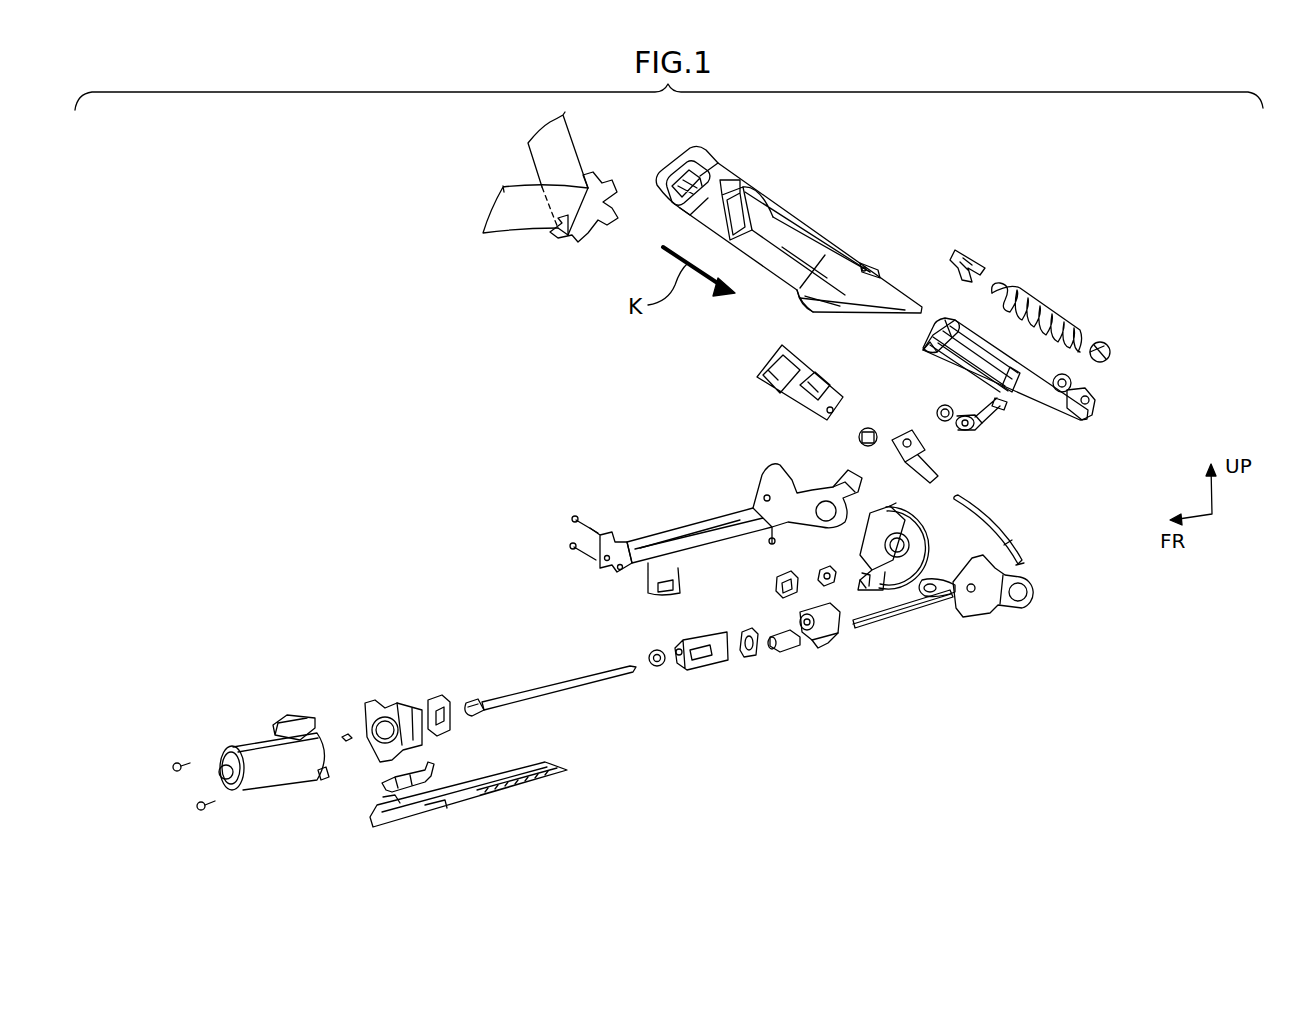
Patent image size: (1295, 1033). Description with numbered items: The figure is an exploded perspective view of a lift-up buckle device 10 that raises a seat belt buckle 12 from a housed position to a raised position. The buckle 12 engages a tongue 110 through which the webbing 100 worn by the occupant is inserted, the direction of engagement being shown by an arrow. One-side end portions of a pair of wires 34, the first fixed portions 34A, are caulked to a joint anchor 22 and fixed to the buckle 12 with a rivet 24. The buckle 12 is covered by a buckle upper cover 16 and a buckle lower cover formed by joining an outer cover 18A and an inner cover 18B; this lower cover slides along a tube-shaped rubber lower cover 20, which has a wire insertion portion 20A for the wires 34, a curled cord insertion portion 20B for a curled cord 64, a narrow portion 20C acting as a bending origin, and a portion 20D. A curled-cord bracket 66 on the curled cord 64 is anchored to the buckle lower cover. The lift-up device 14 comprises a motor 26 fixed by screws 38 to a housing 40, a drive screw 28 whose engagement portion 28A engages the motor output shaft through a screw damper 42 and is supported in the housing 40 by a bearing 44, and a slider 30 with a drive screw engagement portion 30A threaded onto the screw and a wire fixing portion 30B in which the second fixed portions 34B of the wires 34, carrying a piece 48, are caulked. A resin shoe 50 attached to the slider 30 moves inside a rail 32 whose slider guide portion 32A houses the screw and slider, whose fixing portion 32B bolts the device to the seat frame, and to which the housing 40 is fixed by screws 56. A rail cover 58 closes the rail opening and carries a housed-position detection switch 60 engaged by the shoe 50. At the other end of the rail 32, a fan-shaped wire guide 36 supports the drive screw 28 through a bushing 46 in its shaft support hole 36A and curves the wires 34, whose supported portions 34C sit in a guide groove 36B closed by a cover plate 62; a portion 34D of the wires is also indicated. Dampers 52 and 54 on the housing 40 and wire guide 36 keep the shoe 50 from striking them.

The lift-up buckle device 10 is at (360, 358).
The buckle 12 is at (760, 368).
The lift-up device 14 is at (834, 754).
The buckle upper cover 16 is at (738, 163).
The outer cover 18A is at (868, 257).
The inner cover 18B is at (780, 233).
The lower cover 20 is at (1095, 409).
The wire insertion portion 20A is at (940, 350).
The curled cord insertion portion 20B is at (935, 328).
The narrow portion 20C is at (1000, 410).
The rail bracket 20D is at (1018, 398).
The joint anchor 22 is at (985, 400).
The rivet 24 is at (871, 426).
The motor 26 is at (279, 786).
The drive screw 28 is at (536, 684).
The engagement portion 28A is at (477, 699).
The slider 30 is at (833, 631).
The drive screw engagement portion 30A is at (800, 614).
The wire fixing portion 30B is at (856, 624).
The rail 32 is at (737, 495).
The slider guide portion 32A is at (706, 545).
The fixing portion 32B is at (815, 492).
The wires 34 is at (890, 603).
The first fixed portions 34A is at (980, 504).
The second fixed portions 34B is at (880, 623).
The supported portions 34C is at (1022, 564).
The wire portion 34D is at (1010, 528).
The wire guide 36 is at (935, 547).
The shaft support hole 36A is at (862, 570).
The guide groove 36B is at (919, 512).
The screws 38 is at (196, 805).
The housing 40 is at (391, 724).
The screw damper 42 is at (345, 732).
The bearing 44 is at (661, 666).
The bushing 46 is at (818, 574).
The piece 48 is at (796, 641).
The shoe 50 is at (718, 658).
The damper 52 is at (436, 714).
The damper 54 is at (776, 585).
The screws 56 is at (568, 545).
The rail cover 58 is at (481, 799).
The housed-position detection switch 60 is at (434, 773).
The cover plate 62 is at (986, 600).
The curled cord 64 is at (1040, 291).
The curled-cord bracket 66 is at (990, 262).
The webbing 100 is at (508, 237).
The tongue 110 is at (585, 248).